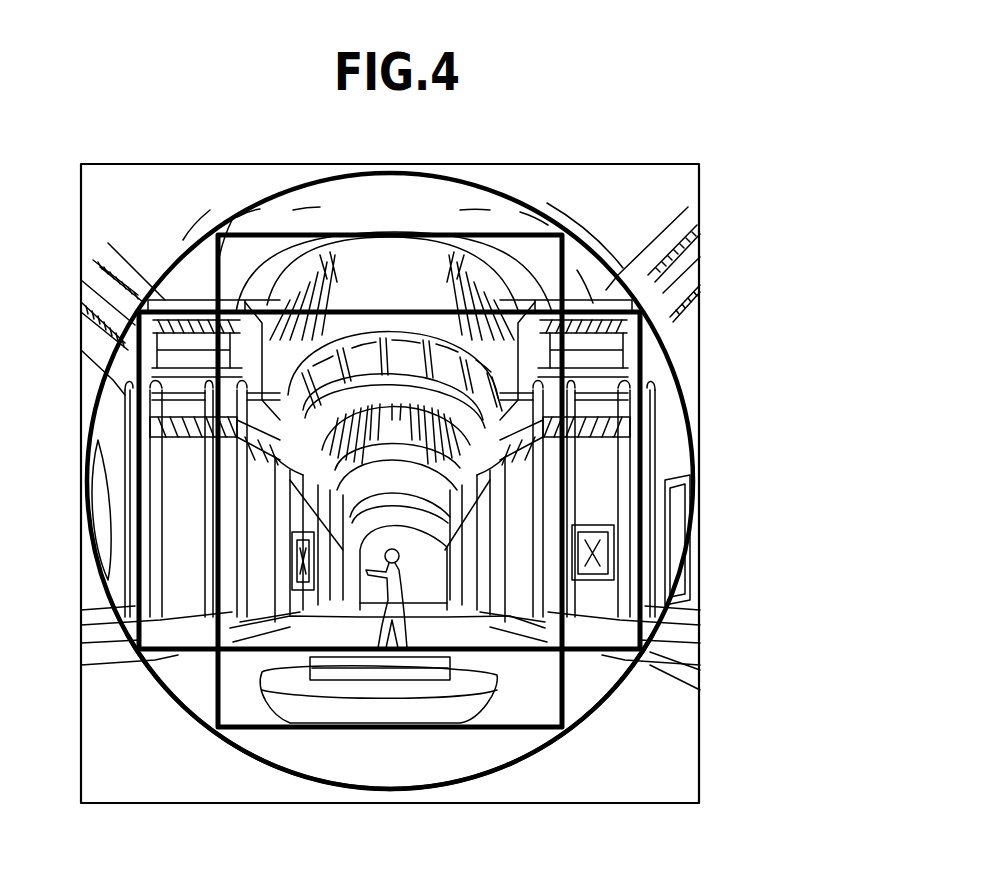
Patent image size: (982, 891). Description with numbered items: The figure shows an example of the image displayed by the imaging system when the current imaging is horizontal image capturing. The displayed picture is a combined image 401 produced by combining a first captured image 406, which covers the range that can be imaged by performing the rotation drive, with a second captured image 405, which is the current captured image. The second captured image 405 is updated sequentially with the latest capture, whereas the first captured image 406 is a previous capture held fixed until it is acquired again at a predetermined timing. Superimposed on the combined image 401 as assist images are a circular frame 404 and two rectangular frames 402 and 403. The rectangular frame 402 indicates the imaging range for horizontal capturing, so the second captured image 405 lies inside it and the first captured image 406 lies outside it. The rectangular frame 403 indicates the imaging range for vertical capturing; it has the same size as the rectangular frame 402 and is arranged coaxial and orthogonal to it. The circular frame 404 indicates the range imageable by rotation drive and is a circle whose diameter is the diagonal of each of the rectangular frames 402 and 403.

The combined image 401 is at (659, 163).
The rectangular frame 402 is at (666, 618).
The rectangular frame 403 is at (520, 732).
The circular frame 404 is at (464, 789).
The second captured image 405 is at (593, 412).
The first captured image 406 is at (688, 328).